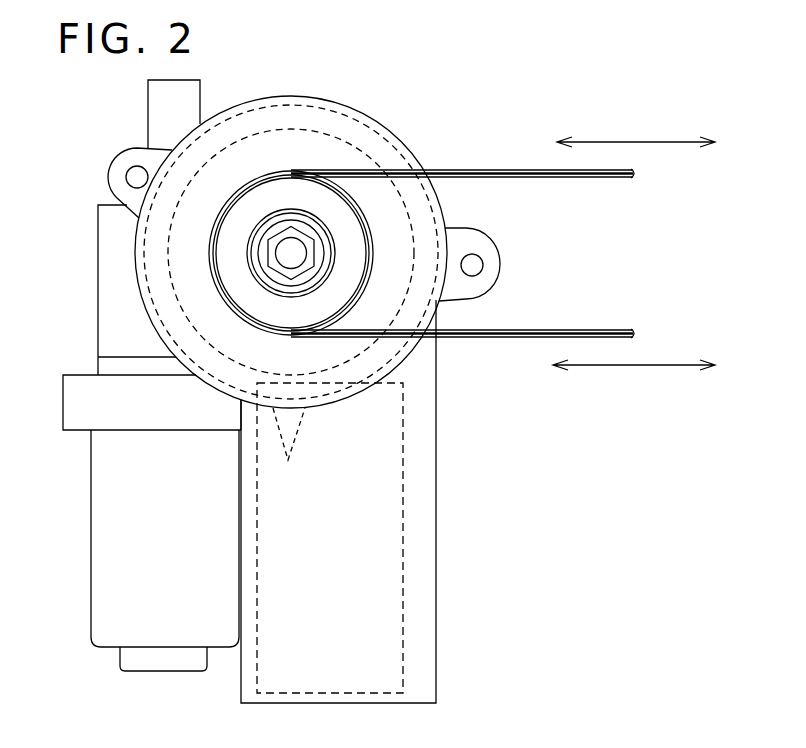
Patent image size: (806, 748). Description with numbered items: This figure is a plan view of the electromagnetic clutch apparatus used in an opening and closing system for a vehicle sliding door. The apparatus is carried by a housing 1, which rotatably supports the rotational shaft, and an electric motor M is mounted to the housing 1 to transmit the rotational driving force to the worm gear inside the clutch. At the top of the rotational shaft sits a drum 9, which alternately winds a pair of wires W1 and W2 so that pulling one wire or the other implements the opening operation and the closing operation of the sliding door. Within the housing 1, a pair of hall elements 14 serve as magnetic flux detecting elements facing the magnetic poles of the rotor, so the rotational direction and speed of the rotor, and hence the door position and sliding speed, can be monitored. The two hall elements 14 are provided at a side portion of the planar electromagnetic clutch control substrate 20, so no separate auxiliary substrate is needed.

The housing 1 is at (425, 482).
The drum 9 is at (343, 216).
The hall element 14 is at (289, 449).
The electromagnetic clutch control substrate 20 is at (403, 585).
The electric motor M is at (108, 545).
The wire W1 is at (497, 170).
The wire W2 is at (545, 330).